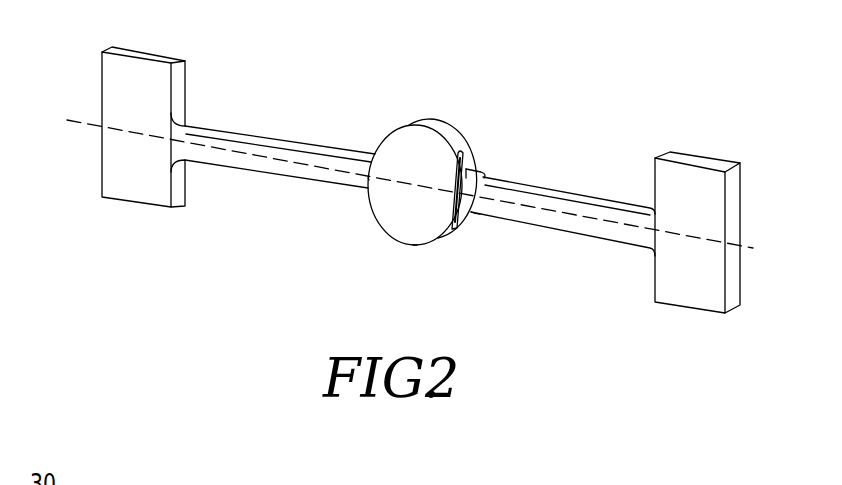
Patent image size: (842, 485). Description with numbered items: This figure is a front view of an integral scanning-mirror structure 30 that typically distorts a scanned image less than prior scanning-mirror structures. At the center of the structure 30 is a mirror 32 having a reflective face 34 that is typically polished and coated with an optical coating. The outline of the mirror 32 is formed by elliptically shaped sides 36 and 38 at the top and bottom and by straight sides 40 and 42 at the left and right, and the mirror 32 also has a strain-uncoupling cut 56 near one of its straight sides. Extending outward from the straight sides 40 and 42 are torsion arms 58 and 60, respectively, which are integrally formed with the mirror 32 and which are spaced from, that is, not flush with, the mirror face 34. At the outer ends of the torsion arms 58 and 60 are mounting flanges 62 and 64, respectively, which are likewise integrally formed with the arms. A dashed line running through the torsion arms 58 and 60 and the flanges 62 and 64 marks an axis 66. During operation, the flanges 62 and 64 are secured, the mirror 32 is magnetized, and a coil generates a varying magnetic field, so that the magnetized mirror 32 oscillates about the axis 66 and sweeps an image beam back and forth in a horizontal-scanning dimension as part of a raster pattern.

The scanning-mirror structure 30 is at (257, 242).
The mirror 32 is at (450, 68).
The reflective face 34 is at (407, 155).
The elliptically shaped side 36 is at (426, 124).
The elliptically shaped side 38 is at (415, 247).
The straight side 40 is at (368, 178).
The straight side 42 is at (487, 176).
The strain-uncoupling cut 56 is at (462, 215).
The torsion arm 58 is at (287, 141).
The torsion arm 60 is at (568, 190).
The mounting flange 62 is at (140, 58).
The mounting flange 64 is at (705, 158).
The axis 66 is at (775, 252).